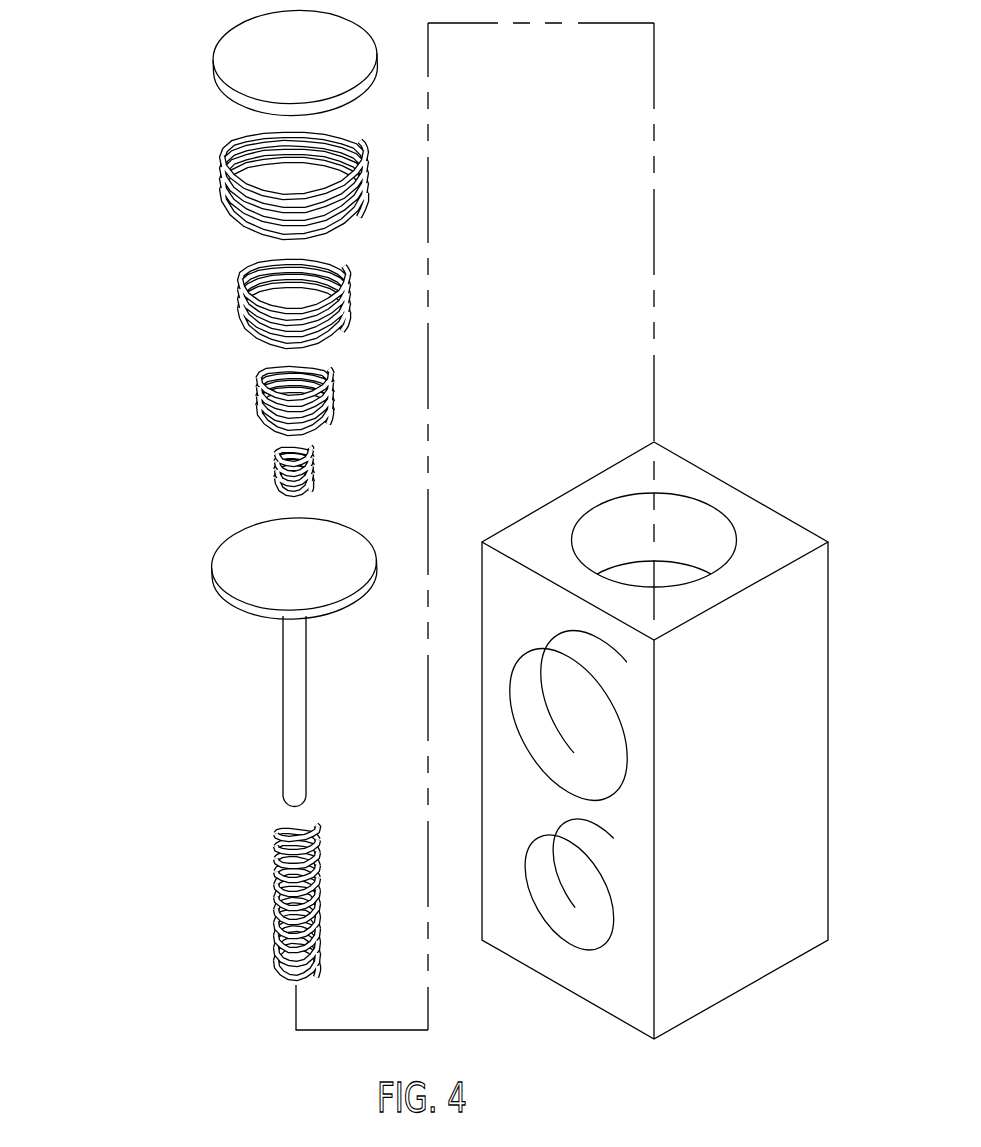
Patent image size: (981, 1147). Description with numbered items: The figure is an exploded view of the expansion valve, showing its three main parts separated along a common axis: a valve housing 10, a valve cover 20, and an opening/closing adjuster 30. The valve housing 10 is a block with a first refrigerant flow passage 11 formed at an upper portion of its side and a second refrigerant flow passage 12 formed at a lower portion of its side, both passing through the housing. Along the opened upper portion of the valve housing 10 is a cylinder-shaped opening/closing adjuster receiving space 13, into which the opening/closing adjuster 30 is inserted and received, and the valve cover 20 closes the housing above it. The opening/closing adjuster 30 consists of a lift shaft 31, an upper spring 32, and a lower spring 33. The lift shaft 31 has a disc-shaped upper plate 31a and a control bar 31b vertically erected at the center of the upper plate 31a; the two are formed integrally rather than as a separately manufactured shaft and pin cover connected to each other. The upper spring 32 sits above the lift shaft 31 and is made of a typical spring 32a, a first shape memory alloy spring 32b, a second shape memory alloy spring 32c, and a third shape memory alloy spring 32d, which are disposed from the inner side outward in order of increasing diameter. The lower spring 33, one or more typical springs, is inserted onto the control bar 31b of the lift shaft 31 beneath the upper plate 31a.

The valve housing 10 is at (609, 710).
The first refrigerant flow passage 11 is at (545, 724).
The second refrigerant flow passage 12 is at (562, 908).
The opening/closing adjuster receiving space 13 is at (700, 532).
The valve cover 20 is at (238, 53).
The opening/closing adjuster 30 is at (51, 292).
The lift shaft 31 is at (97, 562).
The upper plate 31a is at (243, 560).
The control bar 31b is at (293, 723).
The upper spring 32 is at (97, 174).
The typical spring 32a is at (273, 460).
The first shape memory alloy spring 32b is at (255, 383).
The second shape memory alloy spring 32c is at (237, 283).
The third shape memory alloy spring 32d is at (218, 172).
The lower spring 33 is at (273, 845).